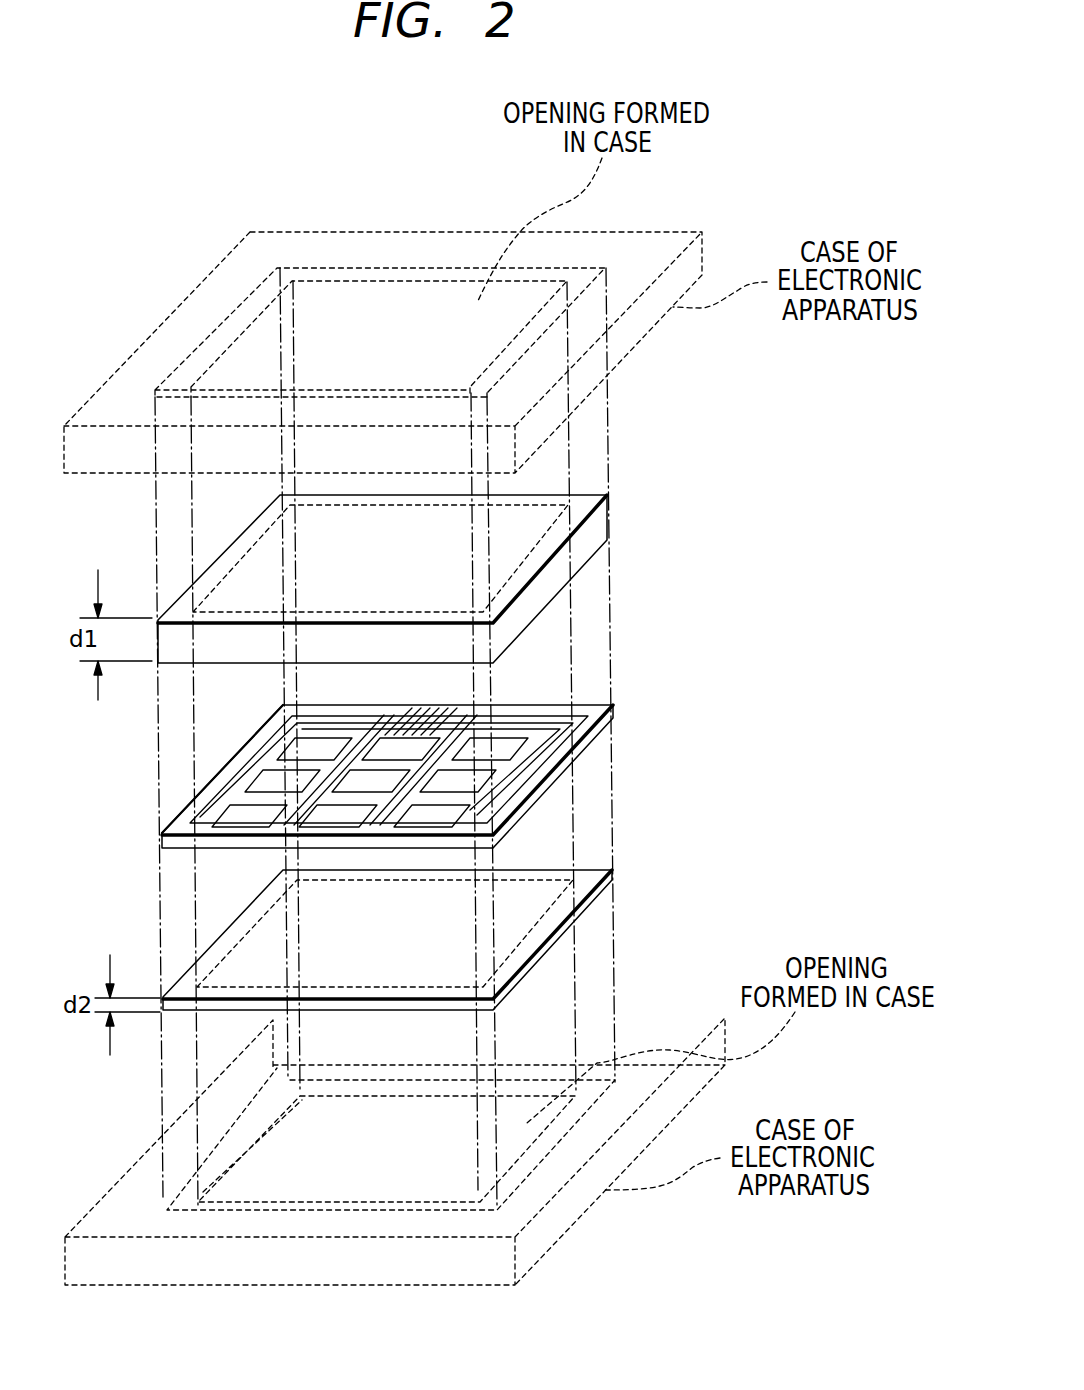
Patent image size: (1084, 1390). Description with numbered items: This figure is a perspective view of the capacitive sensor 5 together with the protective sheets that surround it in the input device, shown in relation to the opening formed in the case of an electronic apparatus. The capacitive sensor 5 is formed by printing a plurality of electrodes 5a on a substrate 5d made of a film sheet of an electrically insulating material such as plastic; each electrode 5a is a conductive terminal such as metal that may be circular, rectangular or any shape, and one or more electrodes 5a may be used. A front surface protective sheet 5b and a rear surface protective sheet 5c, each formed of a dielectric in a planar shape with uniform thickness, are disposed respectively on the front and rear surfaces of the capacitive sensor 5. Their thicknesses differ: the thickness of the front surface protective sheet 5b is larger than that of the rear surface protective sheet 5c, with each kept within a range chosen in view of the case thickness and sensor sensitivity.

The capacitive sensor 5 is at (380, 762).
The electrode 5a is at (283, 753).
The front surface protective sheet 5b is at (547, 588).
The rear surface protective sheet 5c is at (560, 942).
The substrate 5d is at (560, 772).